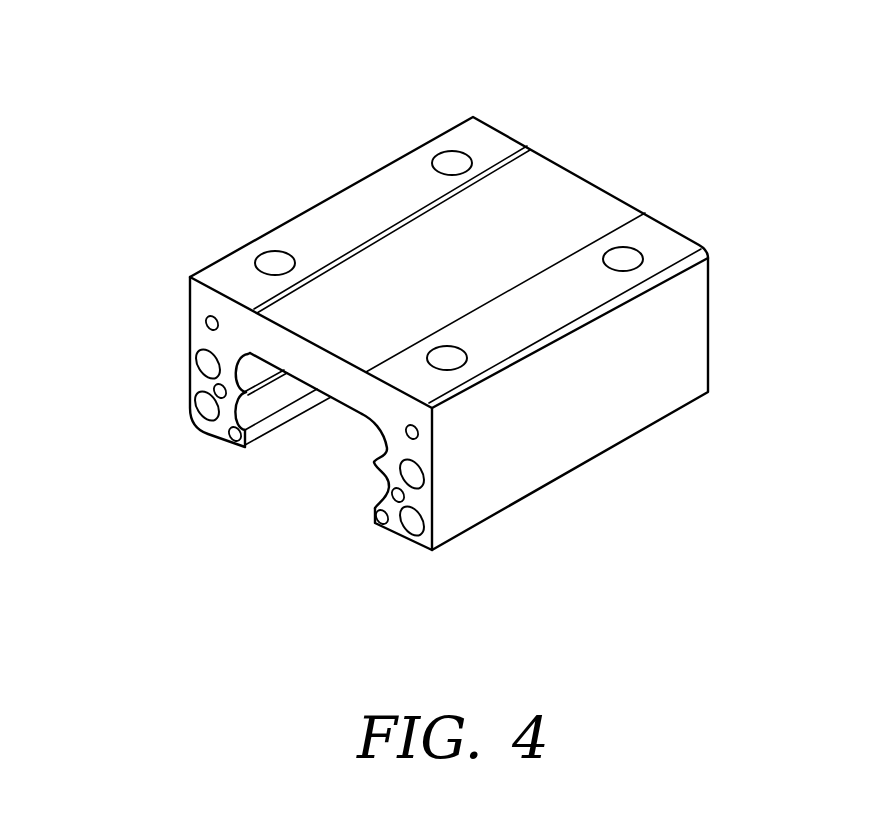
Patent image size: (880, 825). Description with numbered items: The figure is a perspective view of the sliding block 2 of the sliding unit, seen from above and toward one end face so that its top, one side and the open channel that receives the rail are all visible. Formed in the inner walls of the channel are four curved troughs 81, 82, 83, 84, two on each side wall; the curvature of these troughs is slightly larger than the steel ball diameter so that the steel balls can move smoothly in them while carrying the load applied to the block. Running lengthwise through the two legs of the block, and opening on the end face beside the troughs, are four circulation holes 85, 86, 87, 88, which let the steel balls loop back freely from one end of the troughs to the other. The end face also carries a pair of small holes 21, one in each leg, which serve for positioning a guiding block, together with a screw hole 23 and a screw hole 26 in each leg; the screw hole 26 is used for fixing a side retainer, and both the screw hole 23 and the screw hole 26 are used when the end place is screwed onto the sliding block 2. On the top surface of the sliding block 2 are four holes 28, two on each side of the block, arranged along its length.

The sliding block 2 is at (553, 200).
The mounting holes 28 is at (452, 163).
The screw hole 23 is at (207, 321).
The holes 21 is at (216, 389).
The screw hole 26 is at (230, 436).
The curved trough 81 is at (372, 458).
The curved trough 82 is at (263, 380).
The curved trough 83 is at (374, 494).
The curved trough 84 is at (250, 380).
The circulation hole 85 is at (413, 480).
The circulation hole 86 is at (202, 358).
The circulation hole 87 is at (413, 530).
The circulation hole 88 is at (200, 400).